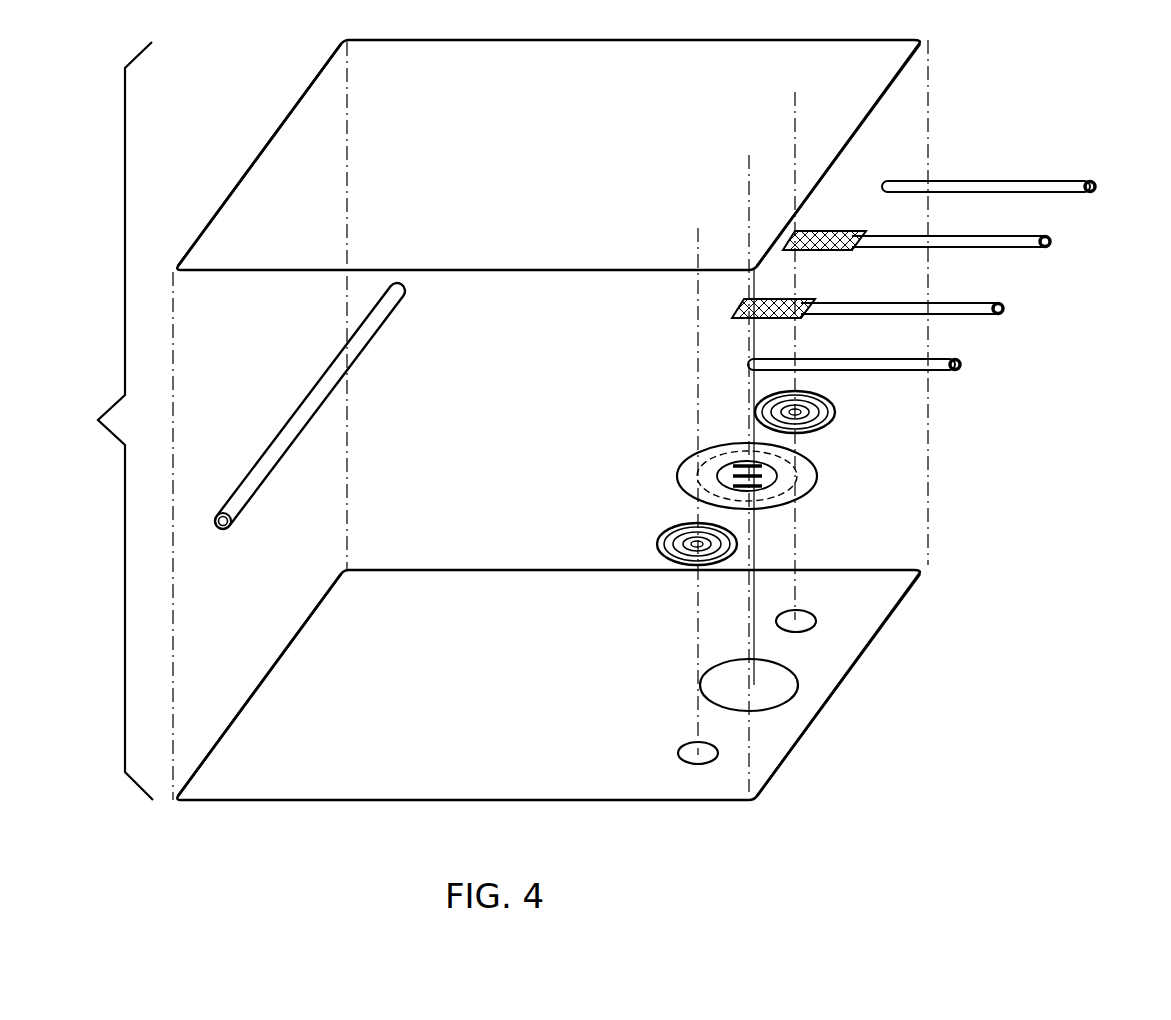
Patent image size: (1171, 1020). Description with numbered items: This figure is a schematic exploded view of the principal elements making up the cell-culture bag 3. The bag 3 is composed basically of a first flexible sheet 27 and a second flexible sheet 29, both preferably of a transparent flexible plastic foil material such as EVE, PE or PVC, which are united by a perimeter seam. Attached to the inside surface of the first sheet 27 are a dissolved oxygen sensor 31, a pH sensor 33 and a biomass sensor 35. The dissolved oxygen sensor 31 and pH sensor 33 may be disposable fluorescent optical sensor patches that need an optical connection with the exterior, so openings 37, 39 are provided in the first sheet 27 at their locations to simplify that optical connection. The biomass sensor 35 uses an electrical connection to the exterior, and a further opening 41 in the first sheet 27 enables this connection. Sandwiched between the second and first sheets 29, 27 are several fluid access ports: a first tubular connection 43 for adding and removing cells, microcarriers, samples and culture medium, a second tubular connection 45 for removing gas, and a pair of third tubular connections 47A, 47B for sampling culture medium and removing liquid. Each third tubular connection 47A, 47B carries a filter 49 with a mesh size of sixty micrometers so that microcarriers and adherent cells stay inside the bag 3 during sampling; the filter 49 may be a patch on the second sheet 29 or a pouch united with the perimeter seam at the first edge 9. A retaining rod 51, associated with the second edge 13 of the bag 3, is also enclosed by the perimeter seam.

The bag 3 is at (113, 421).
The first edge 9 is at (853, 148).
The second edge 13 is at (262, 152).
The first flexible sheet 27 is at (833, 656).
The second flexible sheet 29 is at (872, 73).
The dissolved oxygen sensor 31 is at (680, 537).
The pH sensor 33 is at (815, 404).
The biomass sensor 35 is at (722, 462).
The opening 37 is at (690, 752).
The opening 39 is at (805, 620).
The opening 41 is at (731, 676).
The first tubular connection 43 is at (932, 364).
The second tubular connection 45 is at (1063, 187).
The third tubular connection 47A is at (972, 309).
The third tubular connection 47B is at (1020, 243).
The filter 49 is at (836, 232).
The retaining rod 51 is at (270, 437).